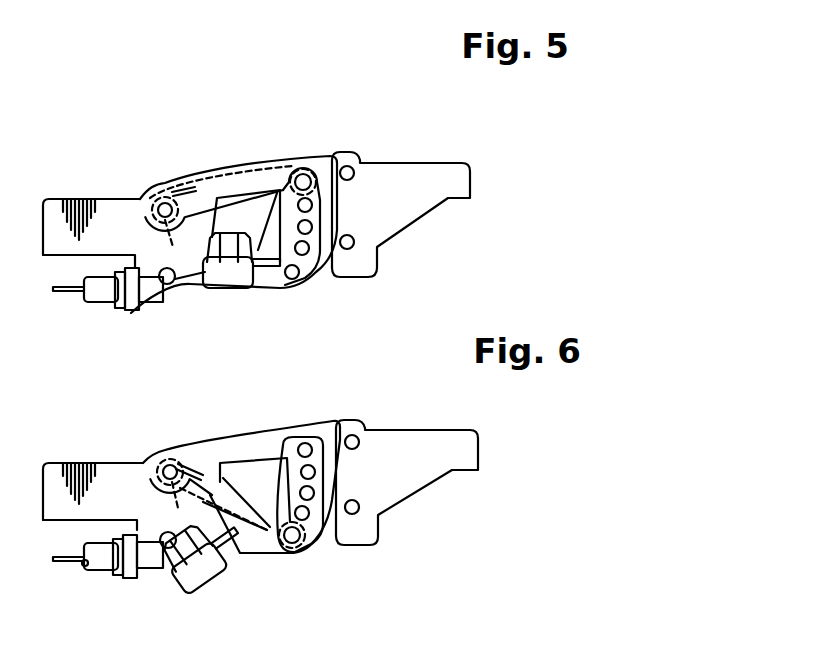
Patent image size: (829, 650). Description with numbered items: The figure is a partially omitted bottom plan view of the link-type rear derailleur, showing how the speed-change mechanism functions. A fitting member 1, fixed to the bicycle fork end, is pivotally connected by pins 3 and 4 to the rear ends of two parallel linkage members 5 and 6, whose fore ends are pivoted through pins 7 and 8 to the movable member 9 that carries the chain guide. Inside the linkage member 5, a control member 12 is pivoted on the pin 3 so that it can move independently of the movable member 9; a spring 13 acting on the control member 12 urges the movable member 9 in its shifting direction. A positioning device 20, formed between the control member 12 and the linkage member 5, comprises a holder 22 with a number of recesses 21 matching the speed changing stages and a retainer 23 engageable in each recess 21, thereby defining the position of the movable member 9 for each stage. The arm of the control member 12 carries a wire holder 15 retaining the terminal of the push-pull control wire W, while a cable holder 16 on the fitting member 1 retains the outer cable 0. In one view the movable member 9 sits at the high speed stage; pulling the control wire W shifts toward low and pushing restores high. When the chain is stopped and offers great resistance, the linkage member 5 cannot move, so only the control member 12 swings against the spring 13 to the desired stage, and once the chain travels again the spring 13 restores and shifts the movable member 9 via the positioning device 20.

In FIG. 5, the fitting member 1 is at (73, 197).
In FIG. 6, the fitting member 1 is at (82, 463).
In FIG. 5, the pin 3 is at (164, 204).
In FIG. 6, the pin 3 is at (172, 462).
In FIG. 5, the spring 13 is at (183, 178).
In FIG. 6, the spring 13 is at (198, 453).
In FIG. 5, the control member 12 is at (242, 208).
In FIG. 6, the control member 12 is at (233, 545).
In FIG. 5, the retainer 23 is at (293, 163).
In FIG. 6, the retainer 23 is at (300, 556).
In FIG. 5, the linkage member 5 is at (313, 157).
In FIG. 6, the linkage member 5 is at (252, 462).
In FIG. 5, the positioning device 20 is at (326, 161).
In FIG. 6, the positioning device 20 is at (315, 546).
In FIG. 5, the holder 22 is at (303, 278).
In FIG. 6, the holder 22 is at (277, 435).
In FIG. 5, the recesses 21 is at (290, 285).
In FIG. 6, the recesses 21 is at (307, 444).
In FIG. 5, the linkage member 6 is at (335, 273).
In FIG. 6, the linkage member 6 is at (335, 545).
In FIG. 5, the pin 7 is at (353, 170).
In FIG. 6, the pin 7 is at (360, 440).
In FIG. 5, the movable member 9 is at (437, 175).
In FIG. 6, the movable member 9 is at (410, 445).
In FIG. 5, the pin 8 is at (353, 244).
In FIG. 6, the pin 8 is at (356, 508).
In FIG. 5, the wire holder 15 is at (230, 281).
In FIG. 6, the wire holder 15 is at (190, 579).
In FIG. 5, the pin 4 is at (180, 292).
In FIG. 6, the pin 4 is at (167, 569).
In FIG. 5, the cable holder 16 is at (128, 310).
In FIG. 6, the cable holder 16 is at (130, 576).
In FIG. 5, the outer cable 0 is at (105, 299).
In FIG. 6, the outer cable 0 is at (104, 563).
In FIG. 5, the control wire W is at (66, 293).
In FIG. 6, the control wire W is at (62, 564).